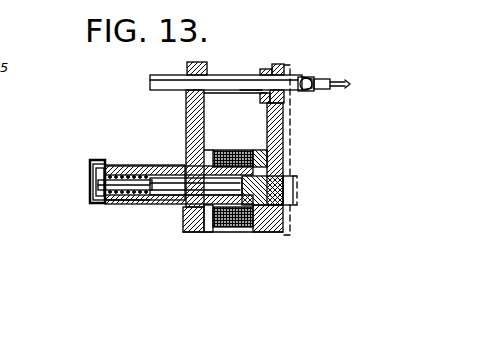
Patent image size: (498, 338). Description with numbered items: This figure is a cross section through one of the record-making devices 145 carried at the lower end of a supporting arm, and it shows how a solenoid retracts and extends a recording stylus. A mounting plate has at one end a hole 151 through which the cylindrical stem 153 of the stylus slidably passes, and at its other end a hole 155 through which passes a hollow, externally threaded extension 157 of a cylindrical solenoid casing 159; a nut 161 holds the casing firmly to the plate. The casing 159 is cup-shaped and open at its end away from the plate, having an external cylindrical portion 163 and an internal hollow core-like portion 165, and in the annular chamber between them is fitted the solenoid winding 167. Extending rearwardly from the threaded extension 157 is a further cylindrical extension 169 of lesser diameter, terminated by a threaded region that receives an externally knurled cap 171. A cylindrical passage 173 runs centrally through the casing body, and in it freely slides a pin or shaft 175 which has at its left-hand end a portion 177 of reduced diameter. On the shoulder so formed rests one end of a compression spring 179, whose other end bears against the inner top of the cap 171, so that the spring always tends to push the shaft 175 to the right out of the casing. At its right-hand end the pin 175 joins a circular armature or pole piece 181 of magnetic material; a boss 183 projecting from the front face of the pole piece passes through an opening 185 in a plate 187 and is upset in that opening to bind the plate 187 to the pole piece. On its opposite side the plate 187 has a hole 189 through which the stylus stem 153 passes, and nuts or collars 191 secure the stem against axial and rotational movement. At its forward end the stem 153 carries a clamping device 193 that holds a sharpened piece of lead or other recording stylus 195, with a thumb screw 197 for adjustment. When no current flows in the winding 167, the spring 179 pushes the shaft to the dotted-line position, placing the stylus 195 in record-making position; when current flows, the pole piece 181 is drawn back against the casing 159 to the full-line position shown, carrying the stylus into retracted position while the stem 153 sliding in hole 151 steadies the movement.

The record-making device 145 is at (124, 276).
The hole 151 is at (197, 62).
The stem 153 is at (229, 78).
The hole 155 is at (196, 234).
The threaded extension 157 is at (150, 204).
The solenoid casing 159 is at (214, 233).
The nut 161 is at (180, 233).
The external cylindrical portion 163 is at (230, 150).
The internal core-like portion 165 is at (236, 233).
The solenoid winding 167 is at (282, 161).
The cylindrical extension 169 is at (136, 165).
The knurled cap 171 is at (92, 200).
The cylindrical passage 173 is at (122, 206).
The pin 175 is at (184, 164).
The reduced-diameter portion 177 is at (97, 180).
The compression spring 179 is at (98, 162).
The pole piece 181 is at (258, 235).
The boss 183 is at (292, 192).
The opening 185 is at (291, 172).
The plate 187 is at (284, 138).
The hole 189 is at (250, 91).
The nuts 191 is at (268, 66).
The clamping device 193 is at (303, 80).
The recording stylus 195 is at (322, 92).
The thumb screw 197 is at (326, 85).